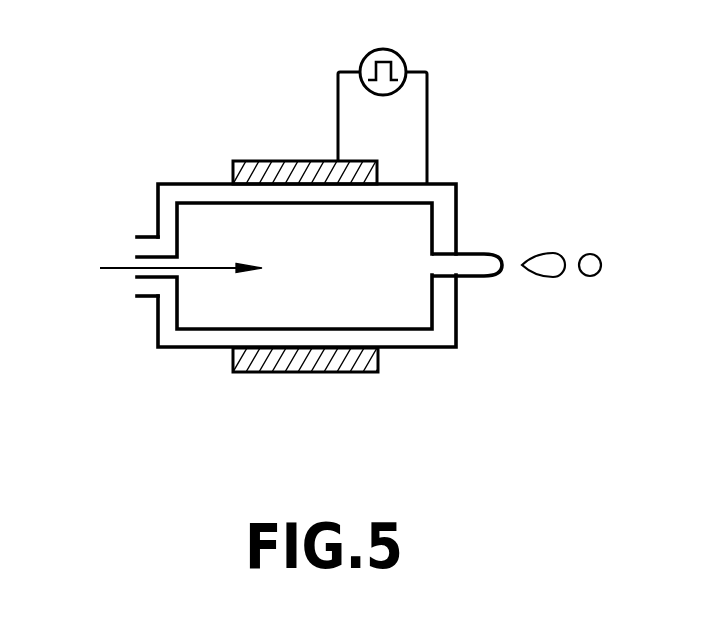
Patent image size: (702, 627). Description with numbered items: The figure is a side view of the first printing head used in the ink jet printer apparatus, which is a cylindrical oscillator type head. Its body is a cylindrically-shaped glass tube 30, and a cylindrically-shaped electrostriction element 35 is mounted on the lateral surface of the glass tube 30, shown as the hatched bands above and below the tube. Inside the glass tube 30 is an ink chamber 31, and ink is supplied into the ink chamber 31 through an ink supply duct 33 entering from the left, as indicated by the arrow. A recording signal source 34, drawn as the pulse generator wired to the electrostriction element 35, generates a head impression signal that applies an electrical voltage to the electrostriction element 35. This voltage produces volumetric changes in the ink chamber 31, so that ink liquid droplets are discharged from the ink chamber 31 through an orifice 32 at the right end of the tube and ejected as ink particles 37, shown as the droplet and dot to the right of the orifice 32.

The glass tube 30 is at (445, 202).
The ink chamber 31 is at (407, 312).
The orifice 32 is at (464, 246).
The ink supply duct 33 is at (138, 260).
The recording signal source 34 is at (405, 60).
The electrostriction element 35 is at (303, 365).
The ink particles 37 is at (550, 270).